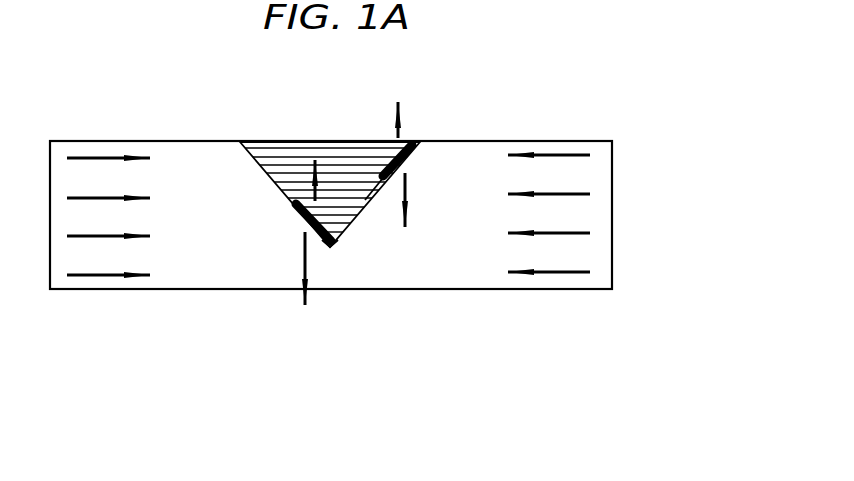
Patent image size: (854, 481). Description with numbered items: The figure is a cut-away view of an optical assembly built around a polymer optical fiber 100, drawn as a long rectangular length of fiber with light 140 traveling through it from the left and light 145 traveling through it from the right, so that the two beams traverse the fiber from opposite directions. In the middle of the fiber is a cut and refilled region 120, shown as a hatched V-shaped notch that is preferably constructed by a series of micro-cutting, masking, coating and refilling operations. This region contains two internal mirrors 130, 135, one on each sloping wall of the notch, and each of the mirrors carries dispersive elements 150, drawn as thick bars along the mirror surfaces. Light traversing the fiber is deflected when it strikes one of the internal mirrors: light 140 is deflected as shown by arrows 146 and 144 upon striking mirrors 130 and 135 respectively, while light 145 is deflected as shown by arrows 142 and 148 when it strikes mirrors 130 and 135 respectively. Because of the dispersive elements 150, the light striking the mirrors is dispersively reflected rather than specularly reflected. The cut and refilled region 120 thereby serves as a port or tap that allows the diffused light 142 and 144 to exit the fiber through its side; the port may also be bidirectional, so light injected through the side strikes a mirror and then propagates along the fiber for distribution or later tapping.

The polymer optical fiber 100 is at (563, 141).
The cut and refilled region 120 is at (330, 154).
The internal mirror 130 is at (328, 250).
The internal mirror 135 is at (383, 178).
The light 140 is at (100, 274).
The arrow (deflected diffused light) 142 is at (302, 188).
The arrow (deflected diffused light) 144 is at (400, 136).
The light 145 is at (578, 192).
The arrow (deflected light) 146 is at (302, 256).
The arrow (deflected light) 148 is at (412, 194).
The dispersive elements 150 is at (294, 206).